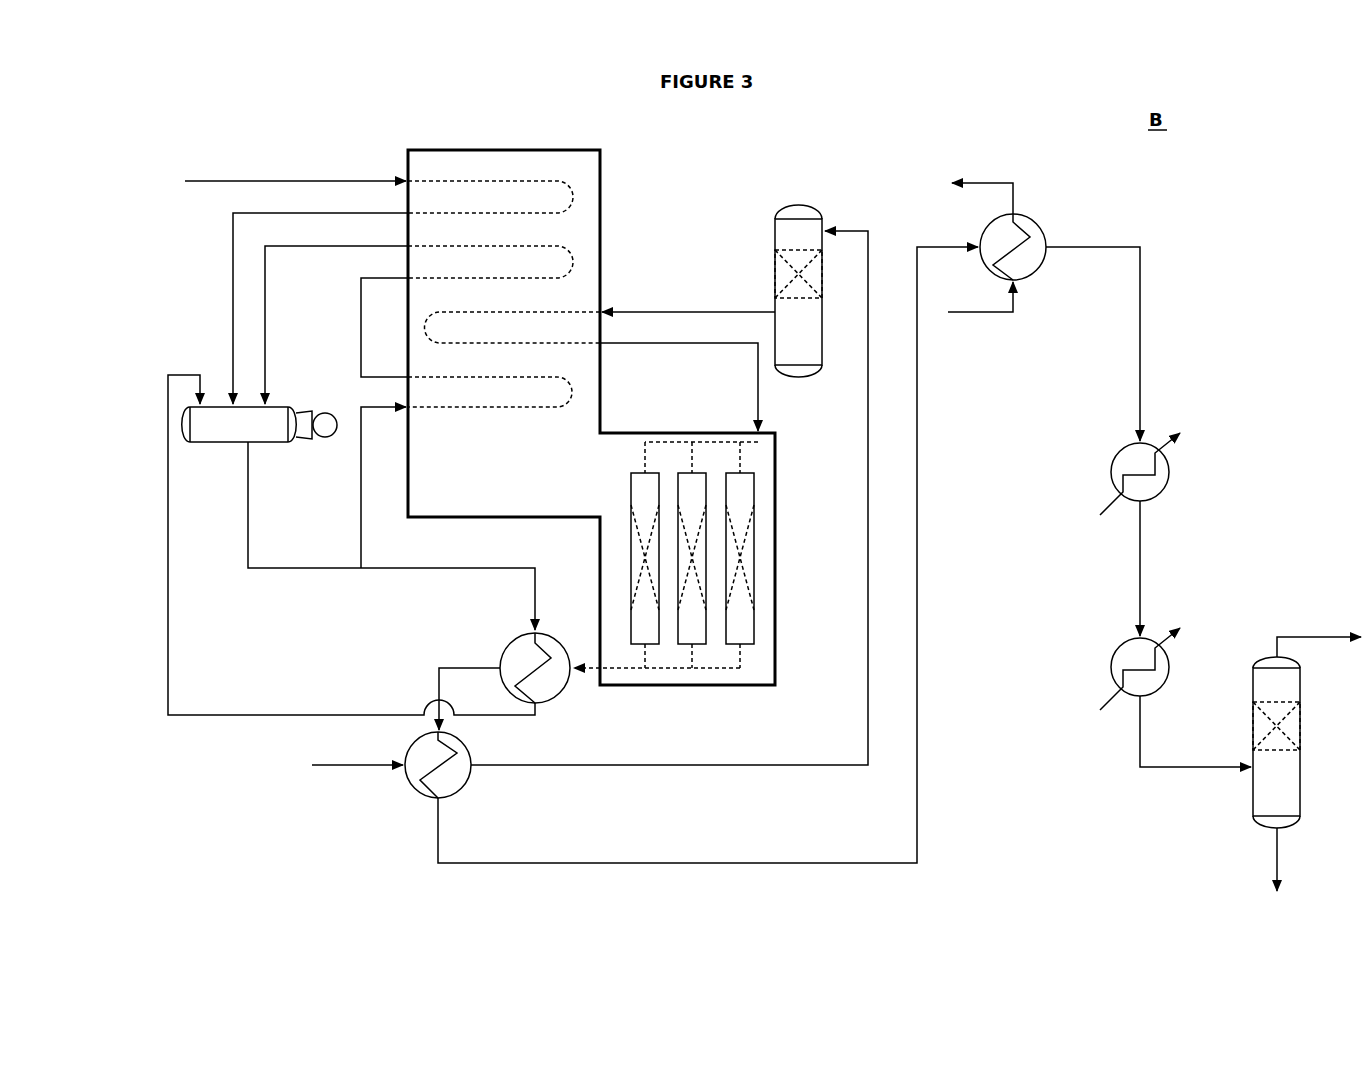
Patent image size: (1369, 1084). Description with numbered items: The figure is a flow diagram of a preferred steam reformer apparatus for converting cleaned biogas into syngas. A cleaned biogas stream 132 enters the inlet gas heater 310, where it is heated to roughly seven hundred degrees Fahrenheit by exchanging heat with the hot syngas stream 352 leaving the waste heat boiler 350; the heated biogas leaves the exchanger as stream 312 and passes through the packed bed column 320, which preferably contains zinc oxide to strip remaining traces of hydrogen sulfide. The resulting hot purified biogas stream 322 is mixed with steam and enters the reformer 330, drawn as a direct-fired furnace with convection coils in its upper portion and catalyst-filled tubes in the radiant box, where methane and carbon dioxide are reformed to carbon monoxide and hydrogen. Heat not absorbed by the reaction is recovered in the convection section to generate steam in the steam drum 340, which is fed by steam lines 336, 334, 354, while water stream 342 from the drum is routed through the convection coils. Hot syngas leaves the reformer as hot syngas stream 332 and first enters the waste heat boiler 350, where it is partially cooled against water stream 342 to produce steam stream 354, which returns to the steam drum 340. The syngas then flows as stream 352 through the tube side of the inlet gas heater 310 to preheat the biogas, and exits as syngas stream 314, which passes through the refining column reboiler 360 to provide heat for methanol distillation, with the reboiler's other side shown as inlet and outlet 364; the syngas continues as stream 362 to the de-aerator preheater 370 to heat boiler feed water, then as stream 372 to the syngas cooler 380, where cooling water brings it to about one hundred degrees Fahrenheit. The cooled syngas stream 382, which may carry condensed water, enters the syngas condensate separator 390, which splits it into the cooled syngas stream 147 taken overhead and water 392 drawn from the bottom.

The cleaned biogas stream 132 is at (357, 770).
The cooled syngas stream 147 is at (1300, 633).
The inlet gas heater 310 is at (472, 779).
The heated feed stream 312 is at (677, 760).
The syngas stream 314 is at (677, 858).
The packed bed column 320 is at (771, 263).
The hot purified biogas stream 322 is at (712, 309).
The reformer 330 is at (778, 555).
The hot syngas stream 332 is at (590, 661).
The steam line 334 is at (345, 250).
The steam line 336 is at (299, 179).
The steam drum 340 is at (217, 418).
The water stream 342 is at (297, 572).
The waste heat boiler 350 is at (516, 640).
The hot syngas stream 352 is at (445, 664).
The steam stream 354 is at (297, 711).
The refining column reboiler 360 is at (1042, 224).
The stream 362 is at (1145, 337).
The outlet stream 364 is at (995, 180).
The de-aerator preheater 370 is at (1124, 444).
The cooled stream 372 is at (1145, 563).
The syngas cooler 380 is at (1127, 633).
The cooled syngas stream 382 is at (1134, 733).
The syngas condensate separator 390 is at (1273, 790).
The water 392 is at (1282, 870).